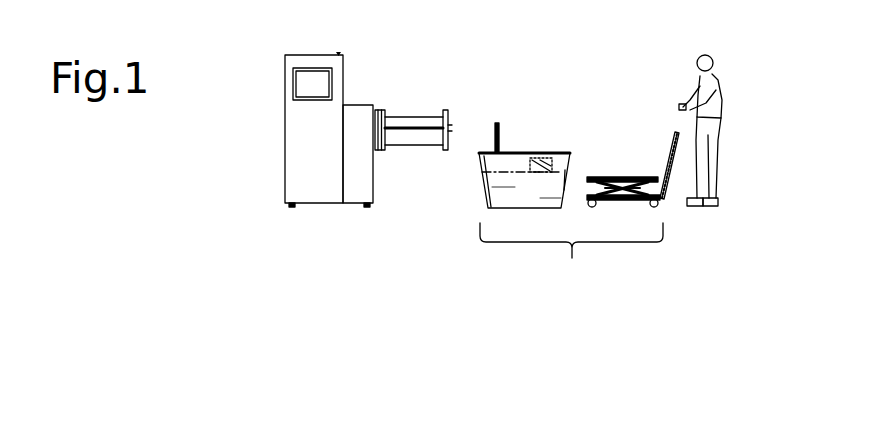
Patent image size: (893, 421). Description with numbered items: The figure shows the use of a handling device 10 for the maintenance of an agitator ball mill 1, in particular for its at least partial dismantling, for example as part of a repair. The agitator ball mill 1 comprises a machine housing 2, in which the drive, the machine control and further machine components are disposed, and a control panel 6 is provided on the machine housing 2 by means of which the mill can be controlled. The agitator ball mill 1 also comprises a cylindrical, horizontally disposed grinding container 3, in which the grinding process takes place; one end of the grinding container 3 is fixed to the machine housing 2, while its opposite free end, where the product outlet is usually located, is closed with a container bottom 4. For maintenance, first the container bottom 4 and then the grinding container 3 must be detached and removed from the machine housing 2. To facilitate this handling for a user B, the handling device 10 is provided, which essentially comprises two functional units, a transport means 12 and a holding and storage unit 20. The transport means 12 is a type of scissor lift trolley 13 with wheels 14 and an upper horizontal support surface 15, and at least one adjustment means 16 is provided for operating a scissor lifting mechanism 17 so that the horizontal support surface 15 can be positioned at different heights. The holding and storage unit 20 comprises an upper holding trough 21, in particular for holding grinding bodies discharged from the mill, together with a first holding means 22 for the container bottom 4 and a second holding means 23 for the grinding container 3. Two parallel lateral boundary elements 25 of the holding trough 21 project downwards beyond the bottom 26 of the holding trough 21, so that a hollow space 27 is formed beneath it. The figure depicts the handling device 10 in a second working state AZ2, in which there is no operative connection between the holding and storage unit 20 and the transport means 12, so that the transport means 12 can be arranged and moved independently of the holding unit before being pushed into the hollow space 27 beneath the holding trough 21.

The agitator ball mill 1 is at (150, 214).
The machine housing 2 is at (304, 124).
The grinding container 3 is at (407, 125).
The container bottom 4 is at (448, 130).
The control panel 6 is at (310, 82).
The handling device 10 is at (571, 257).
The transport means 12 is at (668, 44).
The scissor lift trolley 13 is at (636, 66).
The wheels 14 is at (662, 205).
The horizontal support surface 15 is at (642, 177).
The adjustment means 16 is at (670, 197).
The scissor lifting mechanism 17 is at (646, 214).
The holding and storage unit 20 is at (487, 202).
The holding trough 21 is at (512, 172).
The first holding means 22 is at (487, 165).
The second holding means 23 is at (535, 172).
The lateral boundary elements 25 is at (551, 198).
The bottom 26 is at (515, 187).
The hollow space 27 is at (487, 163).
The user B is at (725, 96).
The second working state AZ2 is at (596, 338).